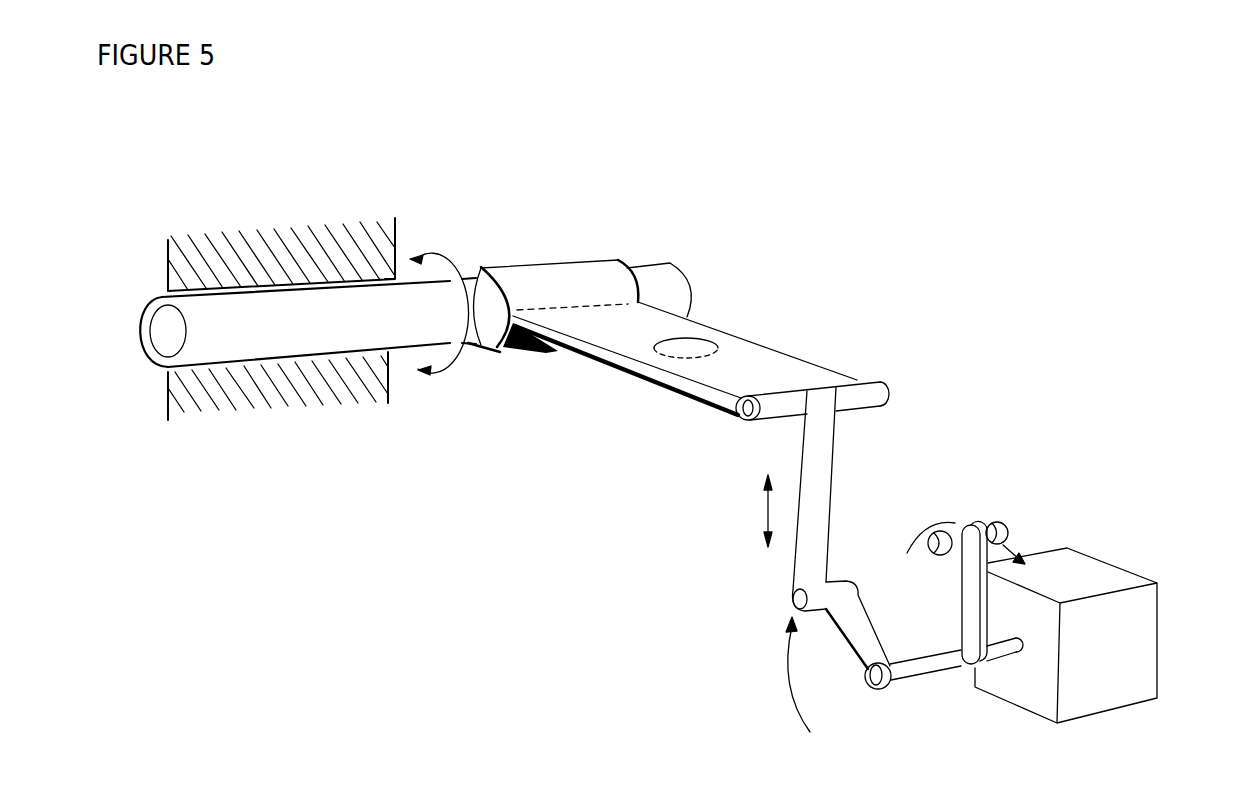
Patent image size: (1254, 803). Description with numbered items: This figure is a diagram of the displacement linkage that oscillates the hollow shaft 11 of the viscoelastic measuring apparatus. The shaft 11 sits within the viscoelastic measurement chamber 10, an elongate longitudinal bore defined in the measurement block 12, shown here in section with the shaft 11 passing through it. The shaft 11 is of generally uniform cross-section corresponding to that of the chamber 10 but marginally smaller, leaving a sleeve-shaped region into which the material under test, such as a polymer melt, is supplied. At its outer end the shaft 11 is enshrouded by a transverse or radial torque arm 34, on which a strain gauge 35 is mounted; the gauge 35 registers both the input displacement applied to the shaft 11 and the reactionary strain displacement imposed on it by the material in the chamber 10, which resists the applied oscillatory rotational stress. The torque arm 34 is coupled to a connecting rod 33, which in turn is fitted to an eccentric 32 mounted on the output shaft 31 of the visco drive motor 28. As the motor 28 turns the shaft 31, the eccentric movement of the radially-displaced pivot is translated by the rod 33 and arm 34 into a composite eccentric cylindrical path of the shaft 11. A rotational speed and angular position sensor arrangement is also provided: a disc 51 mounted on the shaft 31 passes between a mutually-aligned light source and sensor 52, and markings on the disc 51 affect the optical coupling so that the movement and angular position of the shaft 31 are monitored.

The viscoelastic measurement chamber 10 is at (227, 365).
The hollow shaft 11 is at (302, 343).
The measurement block 12 is at (372, 393).
The visco drive motor 28 is at (1145, 640).
The output shaft 31 is at (942, 660).
The eccentric 32 is at (862, 633).
The connecting rod 33 is at (823, 472).
The torque arm 34 is at (780, 360).
The strain gauge 35 is at (673, 349).
The disc 51 is at (970, 587).
The light source and sensor 52 is at (1003, 522).